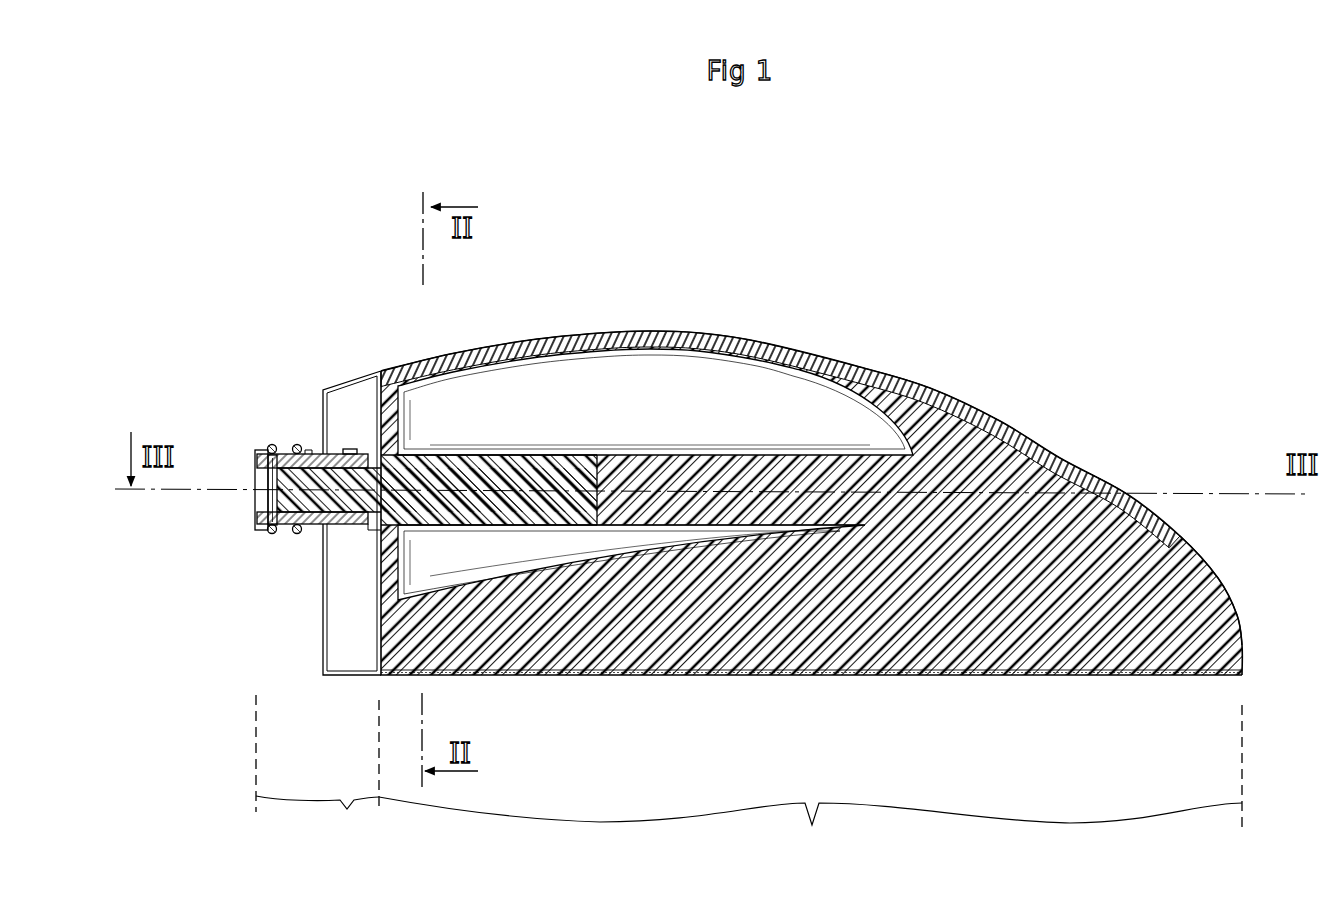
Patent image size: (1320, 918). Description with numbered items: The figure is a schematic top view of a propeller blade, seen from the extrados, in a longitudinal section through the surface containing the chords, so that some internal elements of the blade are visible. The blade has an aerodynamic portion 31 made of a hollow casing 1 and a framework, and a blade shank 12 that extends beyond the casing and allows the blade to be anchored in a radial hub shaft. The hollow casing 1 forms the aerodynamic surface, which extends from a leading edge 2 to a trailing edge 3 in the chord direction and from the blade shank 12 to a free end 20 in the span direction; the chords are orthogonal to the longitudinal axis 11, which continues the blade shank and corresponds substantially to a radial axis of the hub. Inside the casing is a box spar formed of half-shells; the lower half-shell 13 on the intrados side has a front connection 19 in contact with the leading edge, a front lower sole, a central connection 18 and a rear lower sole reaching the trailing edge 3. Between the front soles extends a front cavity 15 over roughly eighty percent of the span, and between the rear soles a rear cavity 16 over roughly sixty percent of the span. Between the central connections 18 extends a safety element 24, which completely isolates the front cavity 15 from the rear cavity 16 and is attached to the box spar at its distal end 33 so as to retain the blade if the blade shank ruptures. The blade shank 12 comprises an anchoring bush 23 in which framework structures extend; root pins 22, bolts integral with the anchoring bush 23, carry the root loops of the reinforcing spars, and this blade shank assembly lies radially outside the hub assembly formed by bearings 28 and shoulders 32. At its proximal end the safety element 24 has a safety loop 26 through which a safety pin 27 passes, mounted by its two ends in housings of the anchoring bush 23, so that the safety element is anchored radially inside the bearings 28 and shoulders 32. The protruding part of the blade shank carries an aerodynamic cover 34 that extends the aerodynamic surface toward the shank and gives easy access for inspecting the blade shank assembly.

The hollow casing 1 is at (968, 676).
The leading edge 2 is at (654, 329).
The trailing edge 3 is at (790, 678).
The longitudinal axis 11 is at (1186, 490).
The blade shank 12 is at (317, 765).
The lower half-shell 13 is at (999, 527).
The front cavity 15 is at (777, 408).
The rear cavity 16 is at (495, 562).
The central connection 18 is at (720, 500).
The front connection 19 is at (533, 343).
The free end 20 is at (1257, 575).
The root pins 22 is at (343, 449).
The anchoring bush 23 is at (312, 533).
The safety element 24 is at (462, 465).
The safety loop 26 is at (262, 506).
The safety pin 27 is at (267, 485).
The bearings 28 is at (272, 535).
The aerodynamic portion 31 is at (810, 779).
The shoulders 32 is at (297, 444).
The distal end 33 is at (565, 505).
The aerodynamic cover 34 is at (340, 386).